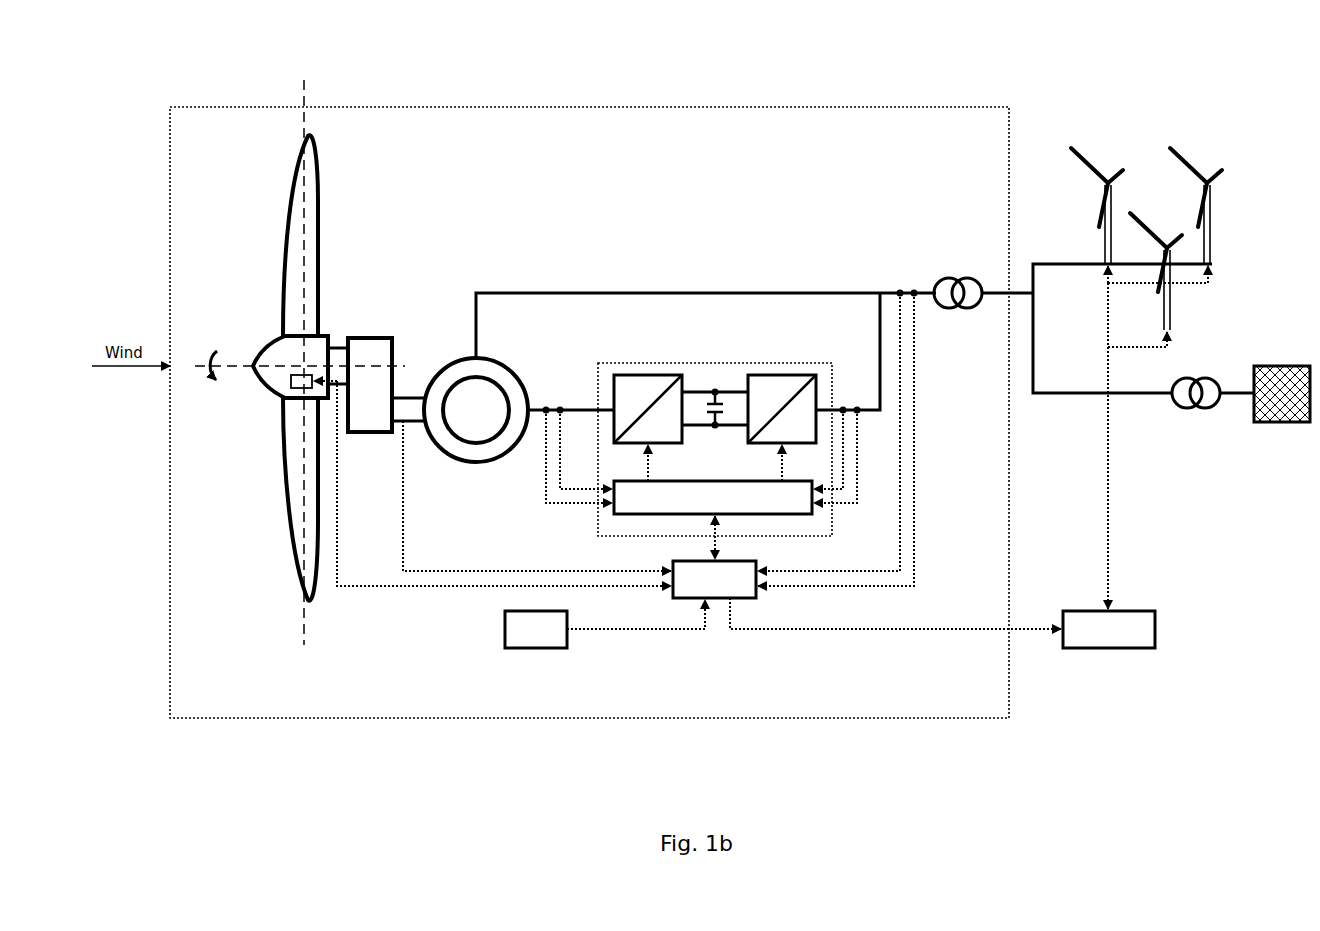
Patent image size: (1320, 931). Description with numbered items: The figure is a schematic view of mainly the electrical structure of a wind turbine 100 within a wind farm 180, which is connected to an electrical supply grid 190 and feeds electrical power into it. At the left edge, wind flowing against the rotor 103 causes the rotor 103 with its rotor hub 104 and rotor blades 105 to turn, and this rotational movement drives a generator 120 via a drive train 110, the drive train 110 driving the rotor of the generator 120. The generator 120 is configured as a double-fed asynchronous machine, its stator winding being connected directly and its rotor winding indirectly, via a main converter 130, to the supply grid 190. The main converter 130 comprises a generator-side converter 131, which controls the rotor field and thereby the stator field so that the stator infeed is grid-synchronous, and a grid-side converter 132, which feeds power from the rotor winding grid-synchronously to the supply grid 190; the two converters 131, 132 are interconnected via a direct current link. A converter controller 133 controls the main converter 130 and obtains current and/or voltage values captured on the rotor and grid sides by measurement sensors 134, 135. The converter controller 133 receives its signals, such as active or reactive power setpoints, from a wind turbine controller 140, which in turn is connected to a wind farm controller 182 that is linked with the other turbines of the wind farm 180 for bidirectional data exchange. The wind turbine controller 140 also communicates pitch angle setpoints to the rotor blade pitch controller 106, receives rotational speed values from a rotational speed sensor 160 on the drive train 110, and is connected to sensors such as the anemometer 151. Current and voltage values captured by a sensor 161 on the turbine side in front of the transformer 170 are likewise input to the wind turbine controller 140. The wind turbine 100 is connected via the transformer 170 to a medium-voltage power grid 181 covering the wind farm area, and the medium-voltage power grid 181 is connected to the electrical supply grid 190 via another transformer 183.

The wind turbine 100 is at (670, 91).
The rotor 103 is at (287, 222).
The rotor hub 104 is at (282, 345).
The rotor blades 105 is at (292, 472).
The rotor blade pitch controller 106 is at (290, 398).
The drive train 110 is at (399, 424).
The generator 120 is at (480, 462).
The main converter 130 is at (704, 362).
The generator-side converter 131 is at (645, 375).
The grid-side converter 132 is at (786, 375).
The converter controller 133 is at (618, 512).
The measurement sensor 134 is at (550, 405).
The measurement sensor 135 is at (848, 405).
The wind turbine controller 140 is at (758, 598).
The anemometer 151 is at (505, 630).
The rotational speed sensor 160 is at (402, 398).
The sensor 161 is at (905, 288).
The transformer 170 is at (956, 312).
The wind farm 180 is at (1150, 136).
The medium-voltage power grid 181 is at (1060, 395).
The wind farm controller 182 is at (1122, 649).
The transformer 183 is at (1198, 408).
The electrical supply grid 190 is at (1286, 424).